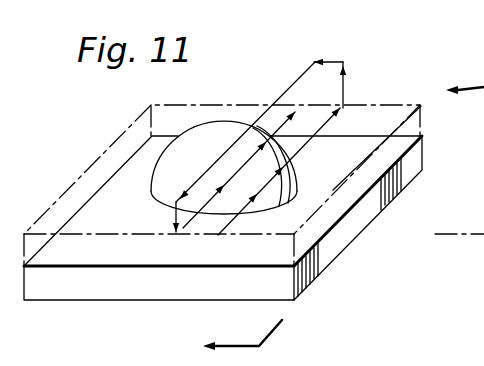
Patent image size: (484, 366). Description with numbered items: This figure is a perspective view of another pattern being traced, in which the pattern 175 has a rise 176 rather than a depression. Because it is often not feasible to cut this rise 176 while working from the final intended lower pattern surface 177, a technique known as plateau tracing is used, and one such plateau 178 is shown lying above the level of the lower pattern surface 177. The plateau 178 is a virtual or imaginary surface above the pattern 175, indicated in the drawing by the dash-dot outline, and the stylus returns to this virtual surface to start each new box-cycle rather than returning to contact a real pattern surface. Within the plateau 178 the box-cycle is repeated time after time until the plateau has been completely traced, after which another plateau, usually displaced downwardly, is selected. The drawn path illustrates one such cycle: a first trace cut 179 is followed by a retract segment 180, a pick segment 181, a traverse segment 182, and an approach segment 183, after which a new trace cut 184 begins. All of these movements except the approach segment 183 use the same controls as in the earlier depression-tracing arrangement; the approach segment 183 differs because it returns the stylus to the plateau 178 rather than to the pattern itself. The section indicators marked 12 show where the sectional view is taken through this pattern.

The section line 12- 12 is at (322, 217).
The pattern 175 is at (307, 277).
The rise 176 is at (293, 180).
The lower pattern surface 177 is at (117, 260).
The plateau 178 is at (110, 146).
The first trace cut 179 is at (301, 150).
The retract segment 180 is at (344, 80).
The pick segment 181 is at (330, 62).
The traverse segment 182 is at (284, 91).
The approach segment 183 is at (173, 210).
The new trace cut 184 is at (189, 222).